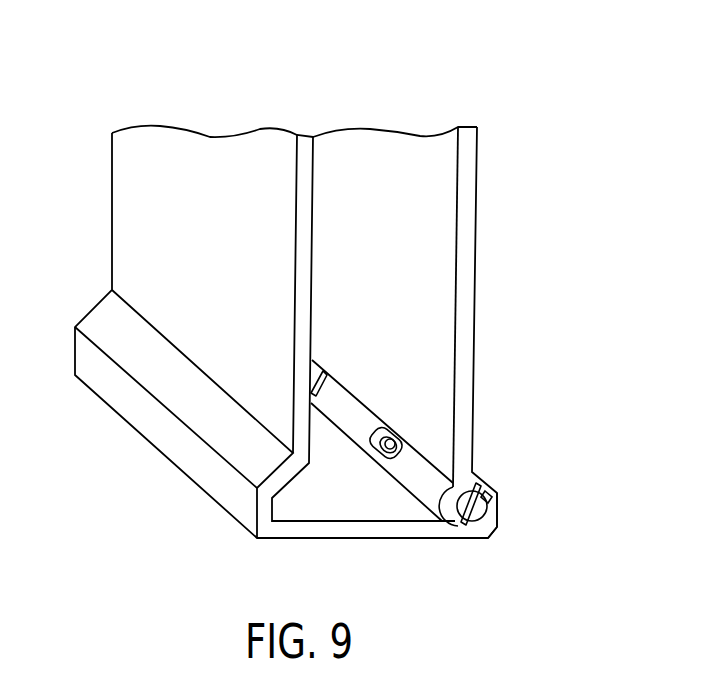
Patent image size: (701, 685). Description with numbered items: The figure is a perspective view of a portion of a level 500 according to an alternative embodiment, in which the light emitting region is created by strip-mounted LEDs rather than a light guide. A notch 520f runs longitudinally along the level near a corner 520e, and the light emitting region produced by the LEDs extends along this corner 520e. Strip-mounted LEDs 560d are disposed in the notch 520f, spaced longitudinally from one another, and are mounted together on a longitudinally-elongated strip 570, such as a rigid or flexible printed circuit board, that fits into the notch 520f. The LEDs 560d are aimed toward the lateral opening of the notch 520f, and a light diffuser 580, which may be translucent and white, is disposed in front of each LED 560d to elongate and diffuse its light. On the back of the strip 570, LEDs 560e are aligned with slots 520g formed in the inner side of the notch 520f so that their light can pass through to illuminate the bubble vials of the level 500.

The level 500 is at (299, 116).
The corner 520e is at (506, 531).
The notch 520f is at (442, 506).
The slot 520g is at (314, 380).
The strip-mounted LED 560d is at (456, 522).
The LED 560e is at (400, 438).
The longitudinally-elongated strip 570 is at (474, 504).
The light diffuser 580 is at (506, 507).